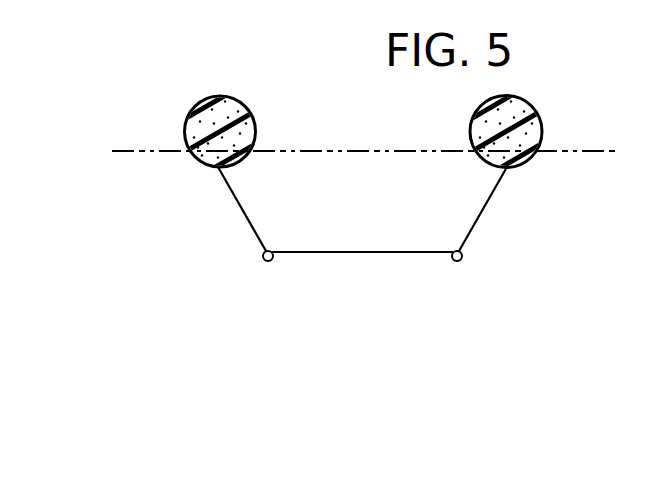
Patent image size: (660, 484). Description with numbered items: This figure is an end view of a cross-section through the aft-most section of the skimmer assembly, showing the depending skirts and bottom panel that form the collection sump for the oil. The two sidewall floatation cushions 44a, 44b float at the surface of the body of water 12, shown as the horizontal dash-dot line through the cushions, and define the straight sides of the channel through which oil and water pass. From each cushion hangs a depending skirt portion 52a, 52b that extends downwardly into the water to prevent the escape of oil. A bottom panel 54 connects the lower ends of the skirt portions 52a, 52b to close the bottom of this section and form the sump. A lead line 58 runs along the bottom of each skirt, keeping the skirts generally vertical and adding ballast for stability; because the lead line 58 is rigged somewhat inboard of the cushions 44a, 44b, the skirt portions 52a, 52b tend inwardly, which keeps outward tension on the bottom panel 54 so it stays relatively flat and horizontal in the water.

The body of water 12 is at (592, 151).
The sidewall floatation cushion 44a is at (188, 118).
The sidewall floatation cushion 44b is at (472, 120).
The skirt portion 52a is at (234, 197).
The skirt portion 52b is at (484, 207).
The bottom panel 54 is at (352, 251).
The lead line 58 is at (262, 255).